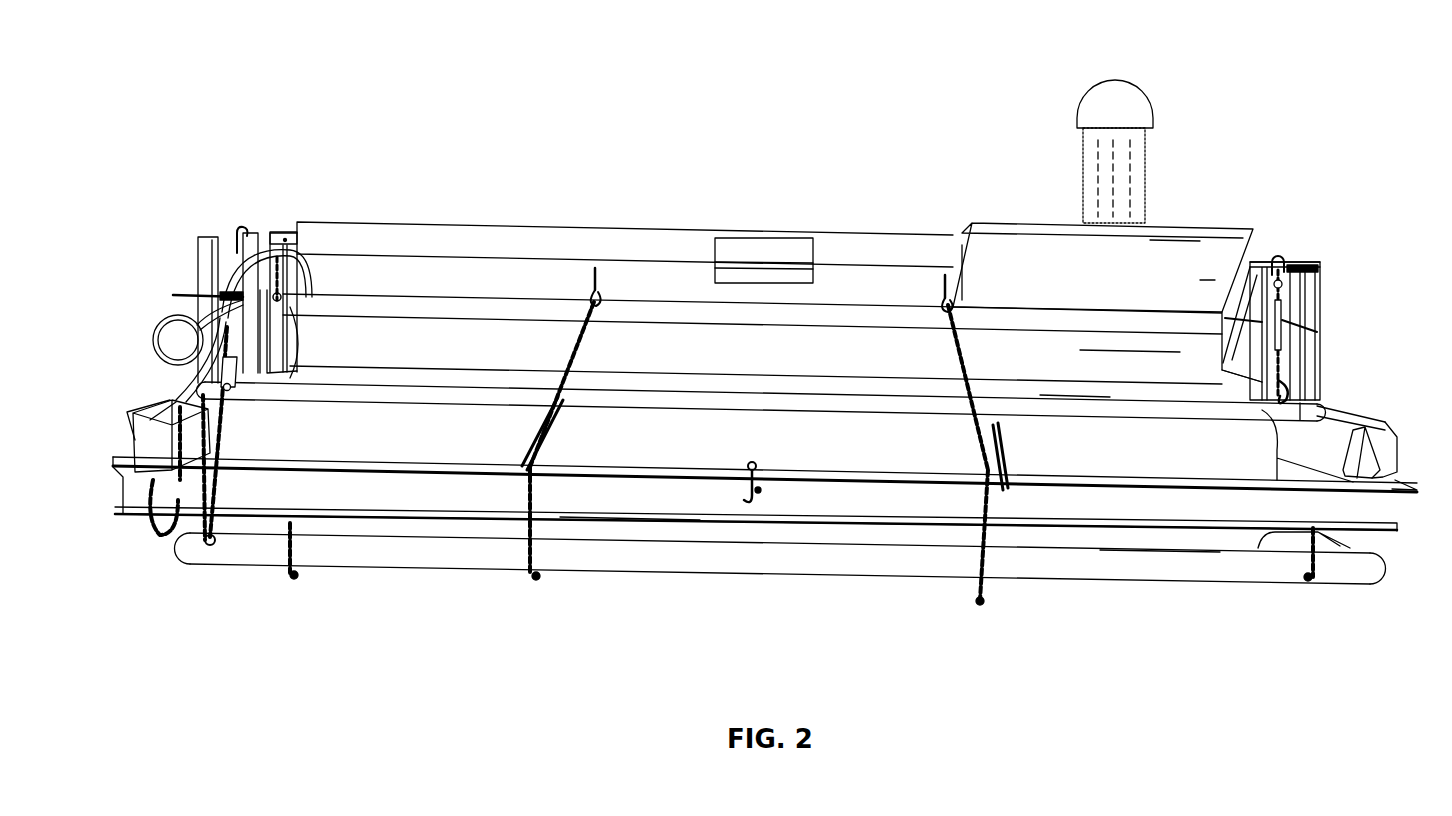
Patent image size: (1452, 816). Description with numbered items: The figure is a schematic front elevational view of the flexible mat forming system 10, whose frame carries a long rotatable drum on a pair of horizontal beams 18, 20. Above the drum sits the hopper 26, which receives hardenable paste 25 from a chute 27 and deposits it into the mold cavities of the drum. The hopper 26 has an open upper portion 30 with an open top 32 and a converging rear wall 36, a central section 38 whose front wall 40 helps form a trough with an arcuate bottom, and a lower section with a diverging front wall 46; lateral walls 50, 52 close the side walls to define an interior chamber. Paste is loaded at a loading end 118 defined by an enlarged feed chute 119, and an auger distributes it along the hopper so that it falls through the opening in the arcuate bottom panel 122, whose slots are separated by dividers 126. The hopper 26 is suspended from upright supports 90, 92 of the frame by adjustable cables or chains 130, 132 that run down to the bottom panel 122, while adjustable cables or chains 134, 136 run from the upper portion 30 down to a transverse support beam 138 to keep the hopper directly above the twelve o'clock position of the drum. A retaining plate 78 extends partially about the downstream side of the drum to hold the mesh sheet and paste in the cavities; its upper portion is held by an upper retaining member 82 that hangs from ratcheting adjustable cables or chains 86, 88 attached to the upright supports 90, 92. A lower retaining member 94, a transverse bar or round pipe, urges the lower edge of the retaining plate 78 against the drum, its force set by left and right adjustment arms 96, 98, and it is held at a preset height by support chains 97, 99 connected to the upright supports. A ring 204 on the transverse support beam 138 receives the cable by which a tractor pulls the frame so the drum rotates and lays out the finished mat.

The flexible mat forming system 10 is at (1346, 254).
The horizontal beam 18 is at (1320, 404).
The horizontal beam 20 is at (150, 445).
The hardenable paste 25 is at (1147, 148).
The hopper 26 is at (686, 232).
The chute 27 is at (1118, 82).
The open upper portion 30 is at (1210, 250).
The open top 32 is at (1057, 232).
The rear wall 36 is at (650, 280).
The central section 38 is at (430, 303).
The front wall 40 is at (883, 280).
The front wall 46 is at (1108, 372).
The lateral wall 50 is at (1265, 250).
The lateral wall 52 is at (300, 232).
The retaining plate 78 is at (1155, 540).
The upper retaining member 82 is at (1058, 405).
The adjustable cable or chain 86 is at (1295, 365).
The adjustable cable or chain 88 is at (225, 297).
The upright support 90 is at (1312, 298).
The upright support 92 is at (205, 252).
The lower retaining member 94 is at (410, 567).
The adjustment arm 96 is at (1330, 535).
The support chain 97 is at (1315, 568).
The adjustment arm 98 is at (212, 542).
The support chain 99 is at (291, 573).
The loading end 118 is at (1000, 245).
The enlarged feed chute 119 is at (1157, 245).
The bottom panel 122 is at (393, 378).
The divider 126 is at (1300, 390).
The adjustable cable or chain 130 is at (1300, 333).
The adjustable cable or chain 132 is at (285, 300).
The adjustable cable or chain 134 is at (948, 335).
The adjustable cable or chain 136 is at (597, 333).
The transverse support beam 138 is at (608, 507).
The ring 204 is at (742, 483).